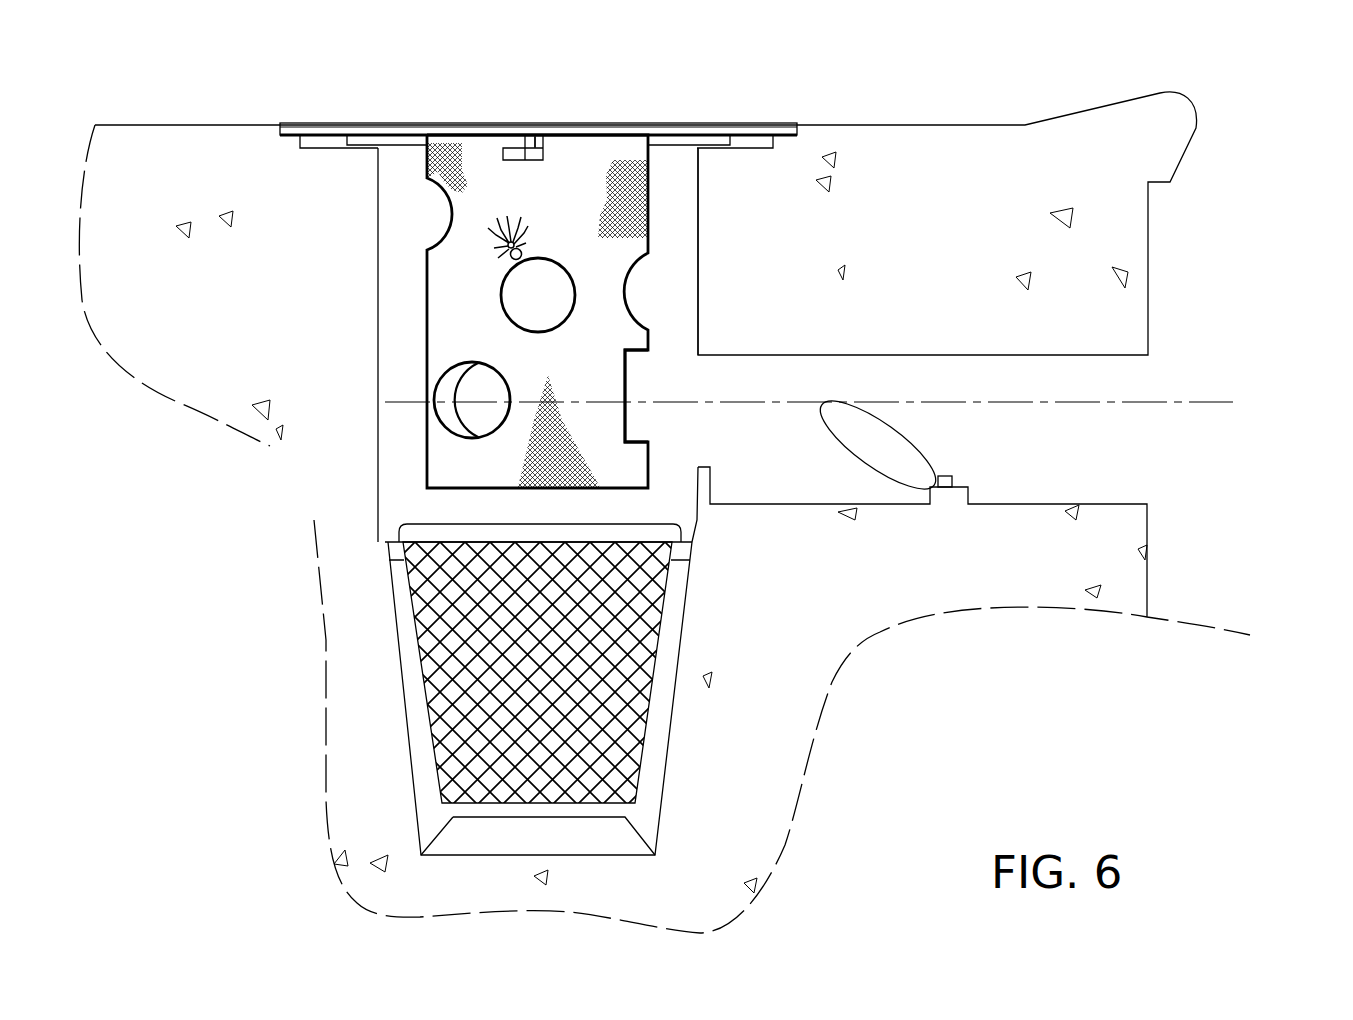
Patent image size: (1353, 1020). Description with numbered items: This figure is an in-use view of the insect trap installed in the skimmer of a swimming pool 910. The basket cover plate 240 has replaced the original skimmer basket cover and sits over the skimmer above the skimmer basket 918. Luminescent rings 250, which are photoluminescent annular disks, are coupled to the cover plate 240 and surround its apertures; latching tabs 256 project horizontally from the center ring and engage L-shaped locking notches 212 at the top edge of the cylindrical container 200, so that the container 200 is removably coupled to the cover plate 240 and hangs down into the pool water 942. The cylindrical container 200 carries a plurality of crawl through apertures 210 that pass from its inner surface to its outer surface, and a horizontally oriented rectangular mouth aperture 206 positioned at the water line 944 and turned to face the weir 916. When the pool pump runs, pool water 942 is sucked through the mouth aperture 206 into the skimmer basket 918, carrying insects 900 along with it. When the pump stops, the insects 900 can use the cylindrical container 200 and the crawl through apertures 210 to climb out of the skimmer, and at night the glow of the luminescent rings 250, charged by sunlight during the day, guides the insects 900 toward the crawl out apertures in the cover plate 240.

The cylindrical container 200 is at (443, 473).
The mouth aperture 206 is at (626, 384).
The crawl through apertures 210 is at (501, 295).
The locking notches 212 is at (544, 148).
The basket cover plate 240 is at (297, 133).
The luminescent rings 250 is at (410, 143).
The latching tabs 256 is at (514, 157).
The insects 900 is at (500, 251).
The swimming pool 910 is at (1222, 147).
The weir 916 is at (885, 455).
The skimmer basket 918 is at (648, 767).
The pool water 942 is at (829, 588).
The water line 944 is at (1158, 402).